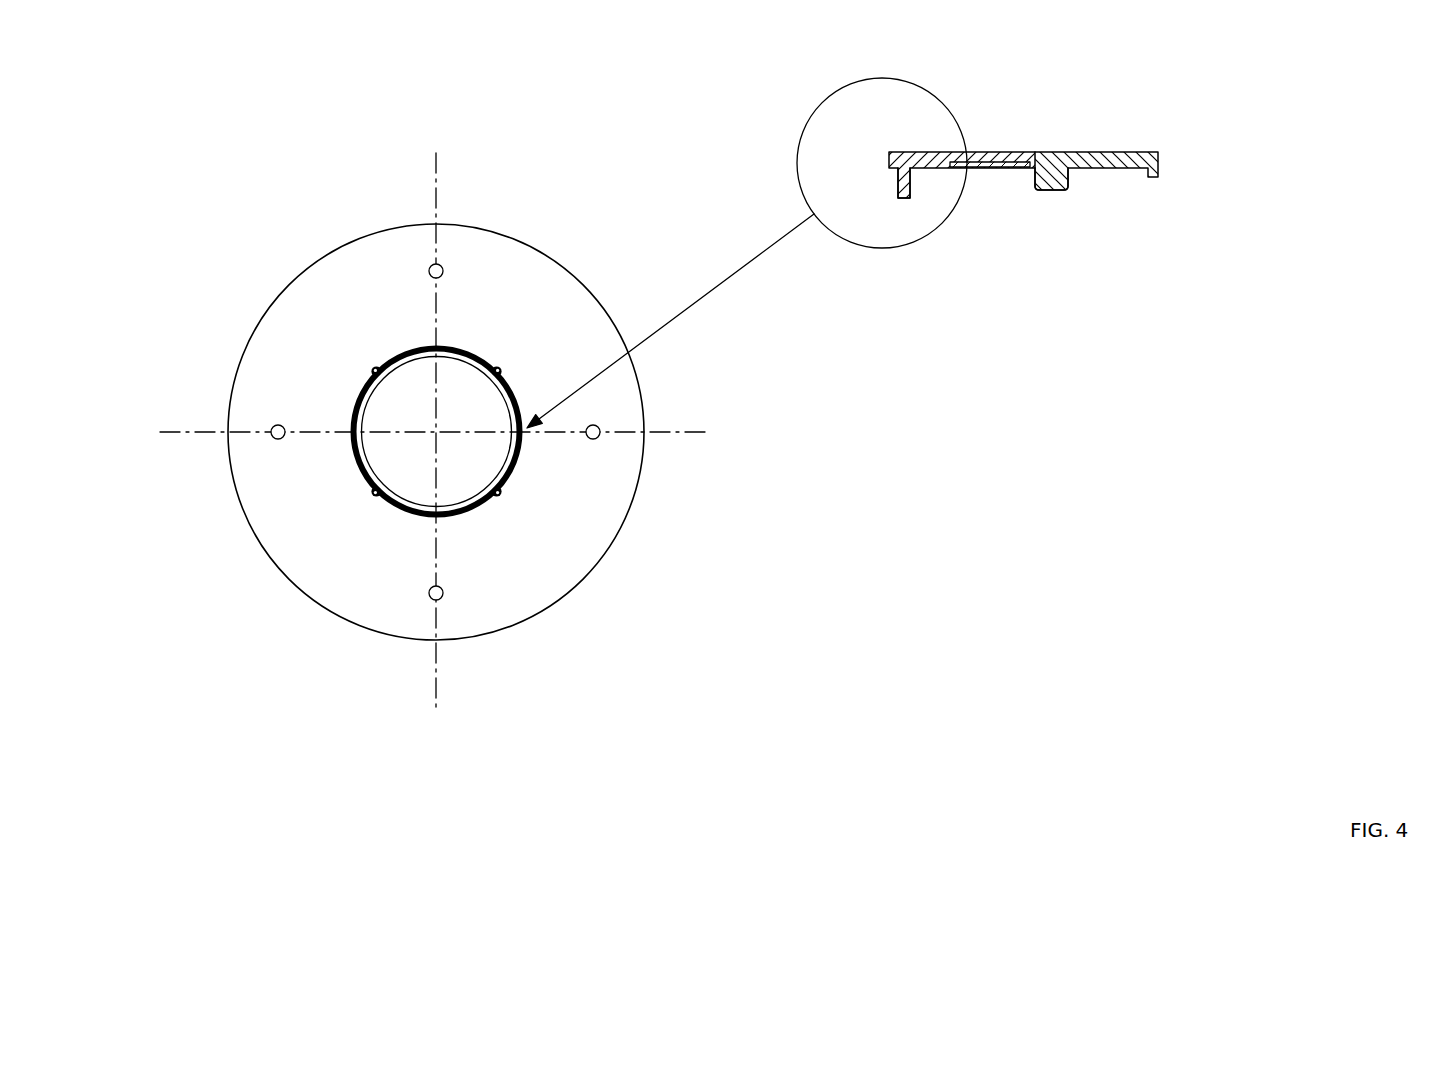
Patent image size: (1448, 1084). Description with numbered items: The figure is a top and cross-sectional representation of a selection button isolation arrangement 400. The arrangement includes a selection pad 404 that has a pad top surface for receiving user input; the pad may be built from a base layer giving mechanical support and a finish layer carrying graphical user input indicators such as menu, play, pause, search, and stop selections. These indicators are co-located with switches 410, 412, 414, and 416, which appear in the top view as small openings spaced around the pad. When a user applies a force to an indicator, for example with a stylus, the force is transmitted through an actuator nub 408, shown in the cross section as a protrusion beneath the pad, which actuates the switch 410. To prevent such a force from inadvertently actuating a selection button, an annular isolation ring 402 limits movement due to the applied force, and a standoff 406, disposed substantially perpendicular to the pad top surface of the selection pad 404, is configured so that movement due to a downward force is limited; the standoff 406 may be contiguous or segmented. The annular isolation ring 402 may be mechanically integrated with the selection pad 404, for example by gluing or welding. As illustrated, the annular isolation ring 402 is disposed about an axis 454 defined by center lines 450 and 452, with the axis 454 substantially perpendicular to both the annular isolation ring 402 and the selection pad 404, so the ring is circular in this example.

The selection button isolation arrangement 400 is at (1117, 61).
The annular isolation ring 402 is at (987, 152).
The selection pad 404 is at (590, 573).
The standoff 406 is at (898, 184).
The actuator nub 408 is at (1070, 182).
The switch 410 is at (617, 422).
The switch 412 is at (410, 600).
The switch 414 is at (257, 411).
The switch 416 is at (411, 263).
The center line 450 is at (436, 153).
The center line 452 is at (160, 432).
The axis 454 is at (414, 442).